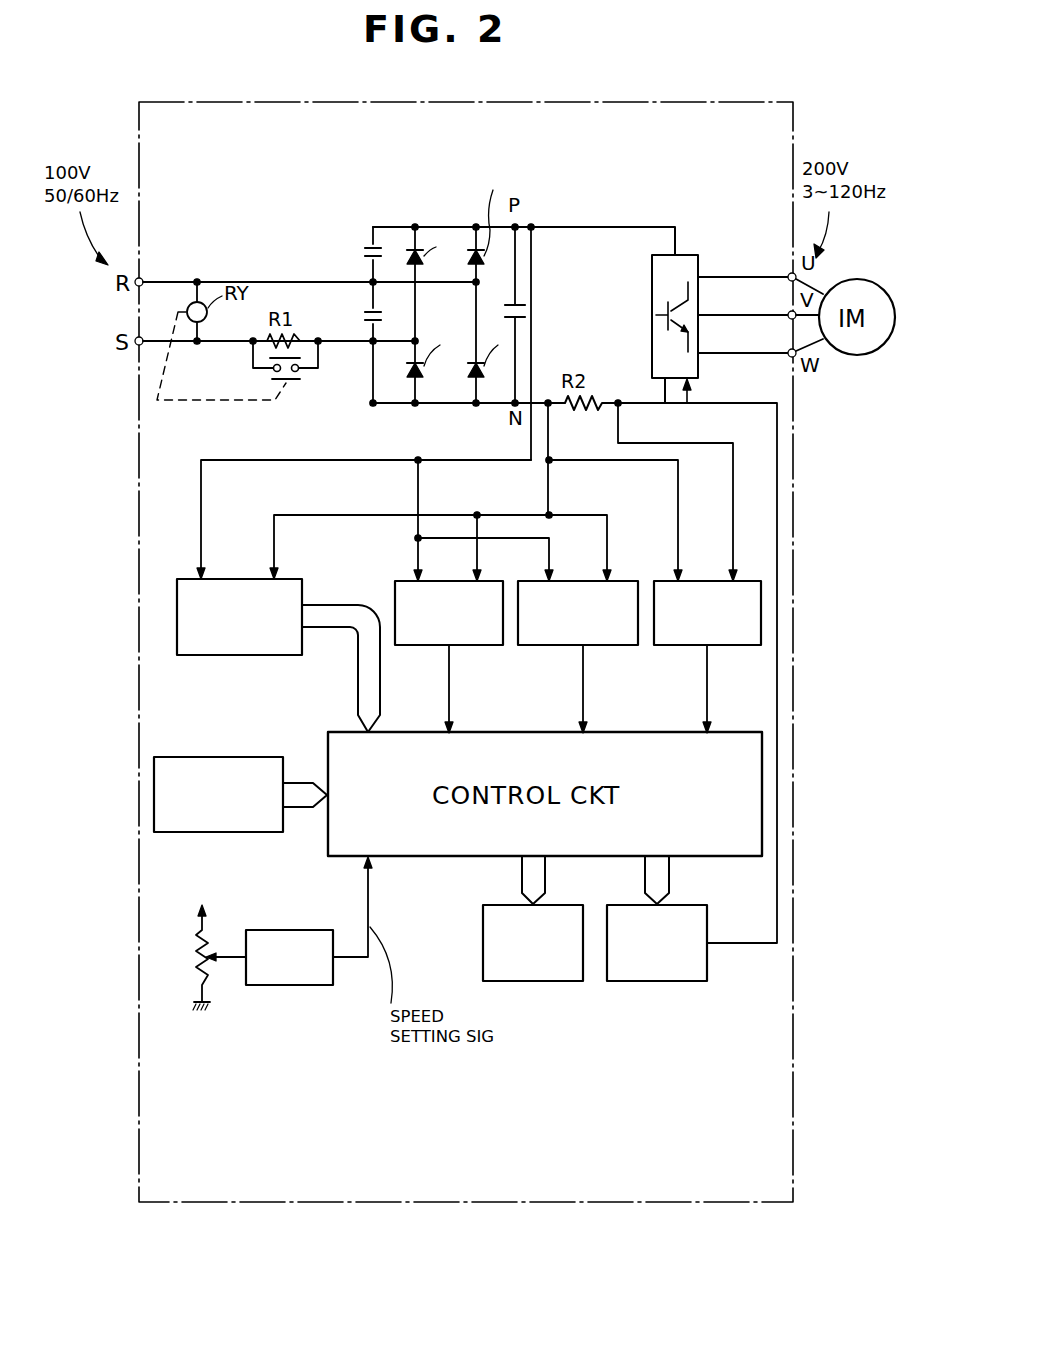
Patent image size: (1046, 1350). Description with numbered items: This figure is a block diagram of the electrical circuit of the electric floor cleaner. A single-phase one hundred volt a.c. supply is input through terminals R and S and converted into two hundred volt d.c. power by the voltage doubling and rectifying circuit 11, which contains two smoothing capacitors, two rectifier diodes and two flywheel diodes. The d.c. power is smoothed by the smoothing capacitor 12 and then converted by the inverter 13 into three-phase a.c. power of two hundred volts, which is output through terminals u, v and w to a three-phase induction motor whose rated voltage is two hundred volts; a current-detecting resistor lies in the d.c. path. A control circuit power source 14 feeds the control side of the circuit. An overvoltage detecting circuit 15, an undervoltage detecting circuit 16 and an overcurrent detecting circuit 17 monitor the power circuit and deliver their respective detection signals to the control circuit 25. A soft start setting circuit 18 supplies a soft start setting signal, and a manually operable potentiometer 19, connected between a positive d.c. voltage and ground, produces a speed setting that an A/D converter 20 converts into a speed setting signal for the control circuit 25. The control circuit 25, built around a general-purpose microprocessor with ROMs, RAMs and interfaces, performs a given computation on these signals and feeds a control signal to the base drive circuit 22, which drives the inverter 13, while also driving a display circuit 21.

The voltage doubling and rectifying circuit 11 is at (400, 220).
The smoothing capacitor 12 is at (520, 296).
The inverter 13 is at (690, 253).
The control circuit power source 14 is at (177, 600).
The overvoltage detecting circuit 15 is at (393, 597).
The undervoltage detecting circuit 16 is at (556, 646).
The overcurrent detecting circuit 17 is at (686, 646).
The soft start setting circuit 18 is at (220, 755).
The manually operable potentiometer 19 is at (200, 955).
The A/D converter 20 is at (287, 930).
The display circuit 21 is at (538, 983).
The base drive circuit 22 is at (660, 983).
The control circuit 25 is at (338, 728).